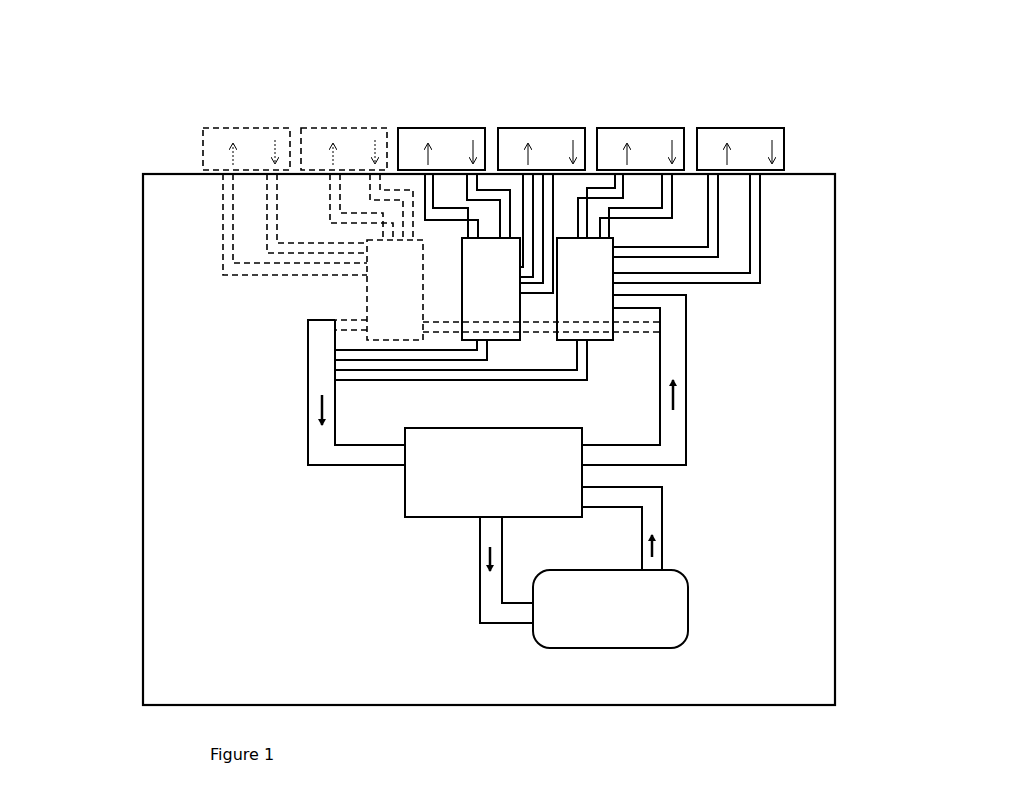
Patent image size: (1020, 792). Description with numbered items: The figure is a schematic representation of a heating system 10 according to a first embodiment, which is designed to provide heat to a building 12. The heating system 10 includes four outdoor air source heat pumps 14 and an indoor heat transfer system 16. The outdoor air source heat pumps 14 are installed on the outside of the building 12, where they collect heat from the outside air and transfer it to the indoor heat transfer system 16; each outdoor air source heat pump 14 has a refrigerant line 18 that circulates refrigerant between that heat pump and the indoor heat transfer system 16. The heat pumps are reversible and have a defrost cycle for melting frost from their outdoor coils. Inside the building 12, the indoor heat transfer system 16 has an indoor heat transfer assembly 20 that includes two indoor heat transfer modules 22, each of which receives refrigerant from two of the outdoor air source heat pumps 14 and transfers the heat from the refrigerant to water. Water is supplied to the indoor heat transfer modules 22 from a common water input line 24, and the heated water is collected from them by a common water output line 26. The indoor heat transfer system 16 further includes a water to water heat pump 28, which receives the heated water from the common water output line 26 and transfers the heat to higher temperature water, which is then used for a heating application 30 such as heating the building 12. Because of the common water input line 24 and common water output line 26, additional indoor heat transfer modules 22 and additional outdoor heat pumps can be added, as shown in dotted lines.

The heating system 10 is at (128, 112).
The building 12 is at (143, 652).
The outdoor air source heat pumps 14 is at (442, 127).
The indoor heat transfer system 16 is at (667, 283).
The refrigerant line 18 is at (760, 223).
The indoor heat transfer assembly 20 is at (142, 195).
The indoor heat transfer modules 22 is at (588, 293).
The common water input line 24 is at (687, 410).
The common water output line 26 is at (308, 393).
The water to water heat pump 28 is at (405, 490).
The heating application 30 is at (622, 622).